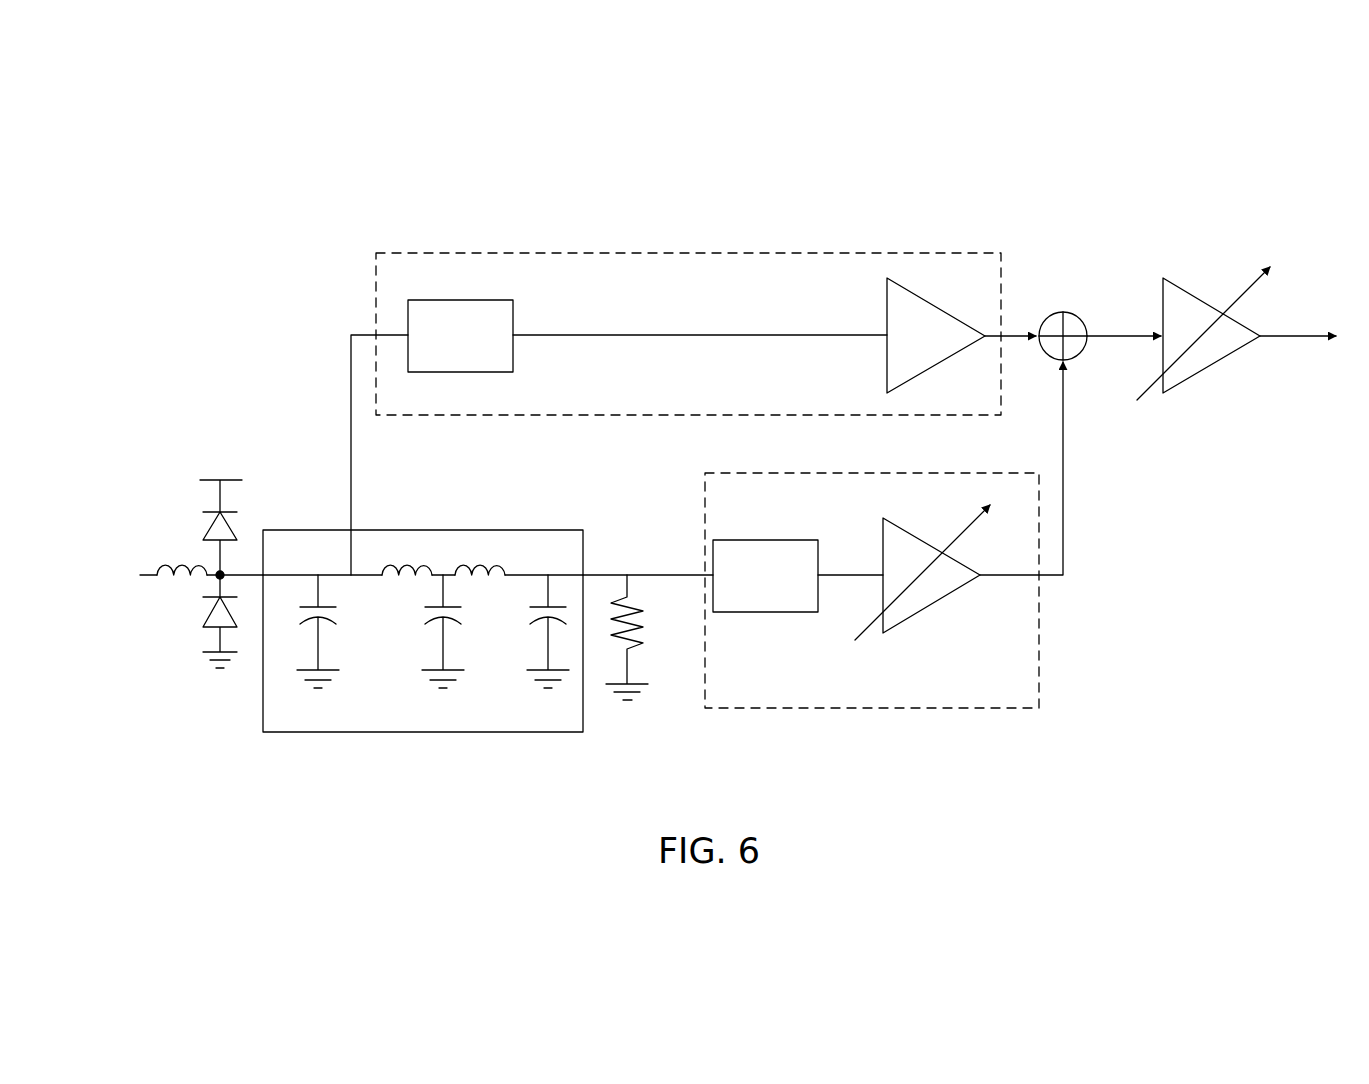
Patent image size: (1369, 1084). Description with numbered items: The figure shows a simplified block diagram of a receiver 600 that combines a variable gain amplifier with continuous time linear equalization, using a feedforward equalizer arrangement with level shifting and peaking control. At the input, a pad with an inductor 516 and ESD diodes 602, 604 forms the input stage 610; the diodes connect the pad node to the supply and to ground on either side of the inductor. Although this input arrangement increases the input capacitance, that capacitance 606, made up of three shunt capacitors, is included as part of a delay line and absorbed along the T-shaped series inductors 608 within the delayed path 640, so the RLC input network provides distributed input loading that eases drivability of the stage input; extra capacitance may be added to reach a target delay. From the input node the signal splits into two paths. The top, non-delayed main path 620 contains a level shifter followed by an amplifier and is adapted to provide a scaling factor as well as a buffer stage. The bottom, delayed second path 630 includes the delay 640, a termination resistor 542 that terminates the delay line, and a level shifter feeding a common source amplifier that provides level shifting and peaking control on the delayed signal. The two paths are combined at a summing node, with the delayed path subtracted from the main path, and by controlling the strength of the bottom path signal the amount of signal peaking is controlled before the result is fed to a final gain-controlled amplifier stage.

The receiver 600 is at (343, 210).
The input pad stage 610 is at (163, 430).
The inductor 516 is at (180, 560).
The upper ESD diode 602 is at (230, 530).
The lower ESD diode 604 is at (183, 632).
The delayed path 640 is at (552, 530).
The capacitance C1, C2, C3 606 is at (361, 634).
The T-shaped series inductors 608 is at (430, 543).
The termination resistor 542 is at (633, 633).
The main path 620 is at (670, 252).
The second path 630 is at (1039, 697).